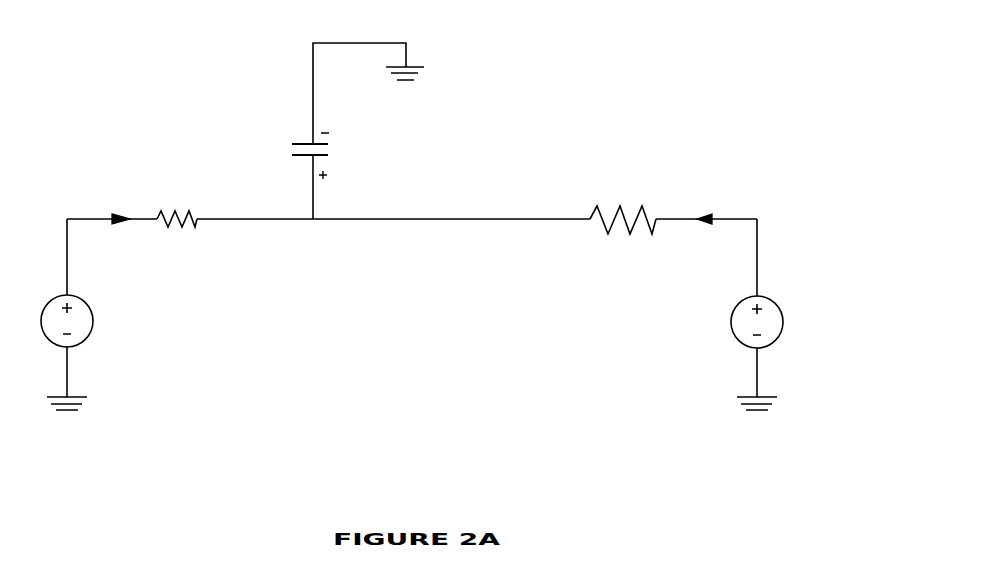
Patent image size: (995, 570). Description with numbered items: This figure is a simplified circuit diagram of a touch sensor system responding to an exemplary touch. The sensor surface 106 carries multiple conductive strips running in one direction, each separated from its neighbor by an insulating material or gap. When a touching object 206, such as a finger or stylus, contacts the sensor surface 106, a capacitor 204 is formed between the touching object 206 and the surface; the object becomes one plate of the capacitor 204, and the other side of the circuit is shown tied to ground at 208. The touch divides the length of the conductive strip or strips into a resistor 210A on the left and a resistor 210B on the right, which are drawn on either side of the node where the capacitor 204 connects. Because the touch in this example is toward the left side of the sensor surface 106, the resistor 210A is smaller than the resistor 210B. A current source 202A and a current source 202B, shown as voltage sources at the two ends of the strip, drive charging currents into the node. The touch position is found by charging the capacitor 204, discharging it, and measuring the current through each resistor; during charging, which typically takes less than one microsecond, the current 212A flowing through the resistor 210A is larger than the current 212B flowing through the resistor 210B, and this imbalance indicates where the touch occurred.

The sensor surface 106 is at (313, 220).
The current source 202A is at (93, 319).
The current source 202B is at (783, 320).
The capacitor 204 is at (318, 157).
The touching object 206 is at (313, 92).
The ground 208 is at (406, 66).
The resistor 210A is at (177, 225).
The resistor 210B is at (630, 230).
The current 212A is at (90, 219).
The current 212B is at (730, 219).